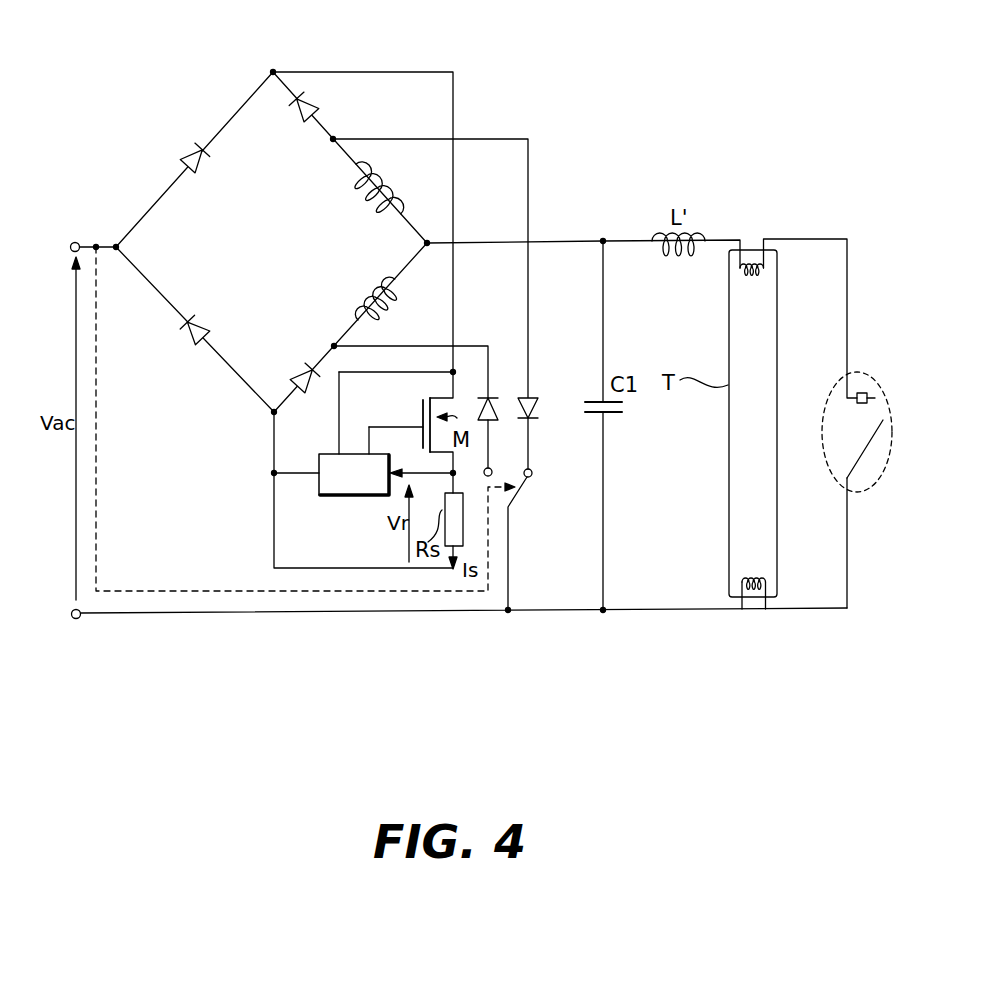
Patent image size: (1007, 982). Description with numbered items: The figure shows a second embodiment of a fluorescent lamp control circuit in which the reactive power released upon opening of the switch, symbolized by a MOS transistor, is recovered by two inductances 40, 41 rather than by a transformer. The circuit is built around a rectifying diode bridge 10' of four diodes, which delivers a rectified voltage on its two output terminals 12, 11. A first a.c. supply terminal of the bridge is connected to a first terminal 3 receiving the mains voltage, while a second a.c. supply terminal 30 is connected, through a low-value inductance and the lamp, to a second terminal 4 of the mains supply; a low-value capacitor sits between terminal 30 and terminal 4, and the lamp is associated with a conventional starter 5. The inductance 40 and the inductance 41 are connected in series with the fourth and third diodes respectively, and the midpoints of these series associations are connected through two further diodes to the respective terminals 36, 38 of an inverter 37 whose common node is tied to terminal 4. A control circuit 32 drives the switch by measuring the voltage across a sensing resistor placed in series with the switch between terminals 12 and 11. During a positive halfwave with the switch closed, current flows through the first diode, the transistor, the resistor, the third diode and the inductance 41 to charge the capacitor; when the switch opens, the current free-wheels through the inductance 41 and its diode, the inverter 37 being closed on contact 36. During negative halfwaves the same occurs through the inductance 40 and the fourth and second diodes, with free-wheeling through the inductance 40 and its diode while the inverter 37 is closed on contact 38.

The first terminal 3 is at (75, 242).
The second terminal 4 is at (78, 619).
The starter 5 is at (858, 372).
The rectifying diode bridge 10' is at (264, 242).
The output terminal 11 is at (272, 412).
The output terminal 12 is at (273, 72).
The second a.c. supply terminal 30 is at (427, 242).
The control circuit 32 is at (328, 497).
The first terminal of inverter 36 is at (493, 468).
The inverter 37 is at (530, 501).
The second terminal of inverter 38 is at (532, 468).
The inductance 40 is at (390, 160).
The inductance 41 is at (390, 308).